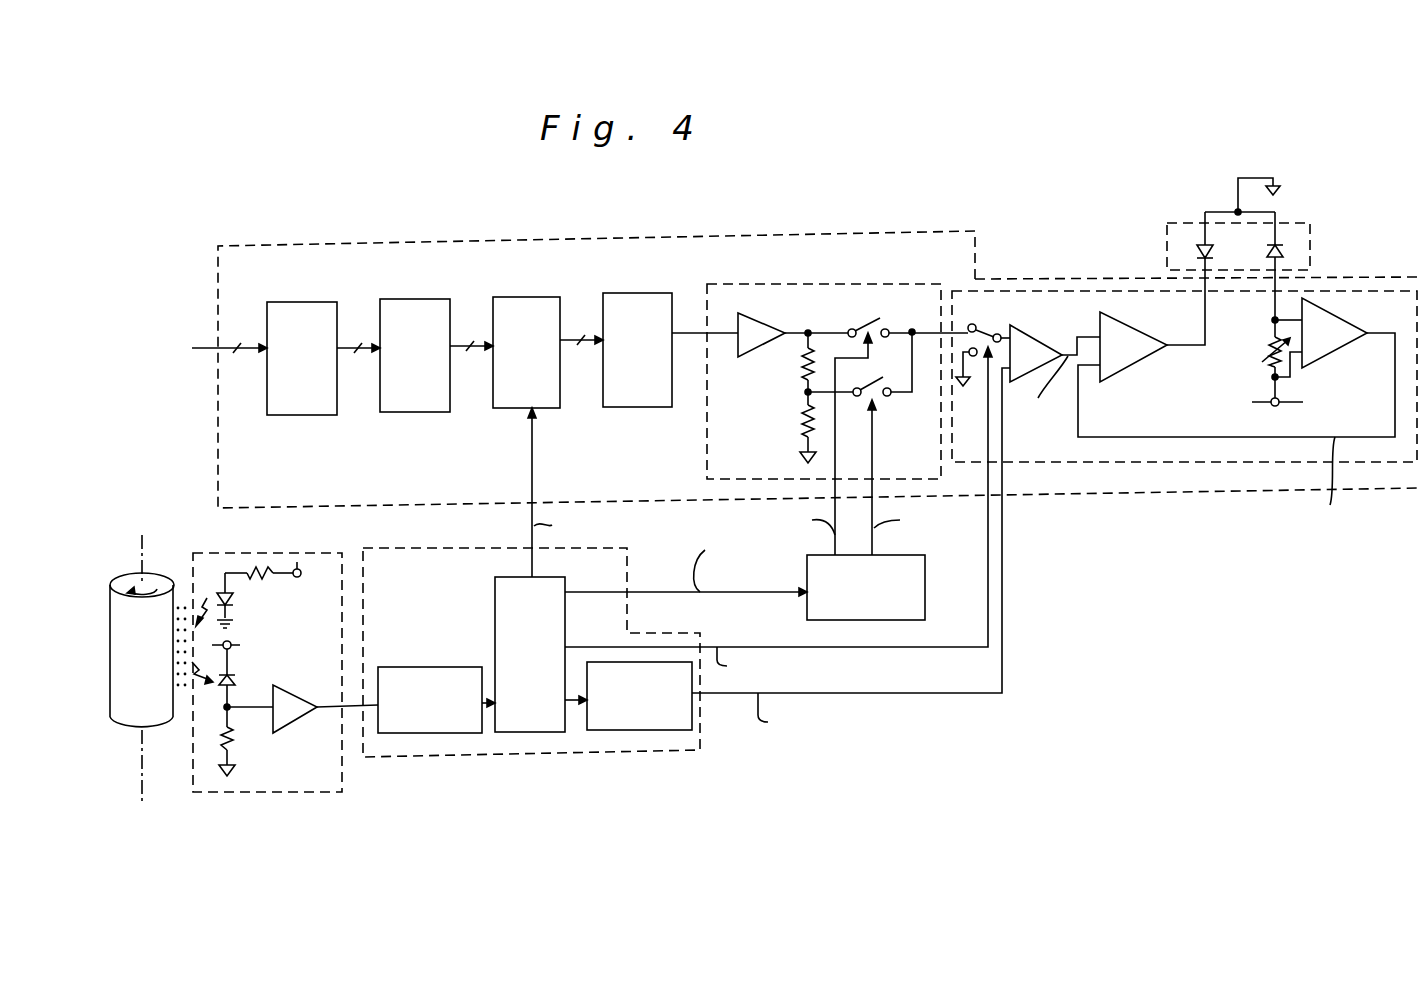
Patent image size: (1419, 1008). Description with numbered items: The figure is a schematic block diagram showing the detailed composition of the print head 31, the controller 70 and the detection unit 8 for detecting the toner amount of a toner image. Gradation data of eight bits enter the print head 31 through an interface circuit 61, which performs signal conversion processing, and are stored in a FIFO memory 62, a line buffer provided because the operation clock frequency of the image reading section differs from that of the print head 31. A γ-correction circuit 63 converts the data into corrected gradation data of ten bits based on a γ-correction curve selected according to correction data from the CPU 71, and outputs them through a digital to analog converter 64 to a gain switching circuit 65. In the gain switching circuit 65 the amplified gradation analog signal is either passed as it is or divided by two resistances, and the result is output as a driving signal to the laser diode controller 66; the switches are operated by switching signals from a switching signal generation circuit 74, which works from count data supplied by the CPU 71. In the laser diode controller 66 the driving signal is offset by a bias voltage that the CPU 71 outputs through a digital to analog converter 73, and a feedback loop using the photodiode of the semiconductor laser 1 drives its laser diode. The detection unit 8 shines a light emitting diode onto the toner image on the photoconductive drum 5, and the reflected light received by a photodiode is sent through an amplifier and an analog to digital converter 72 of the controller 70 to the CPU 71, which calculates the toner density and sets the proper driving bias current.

The semiconductor laser 1 is at (1308, 223).
The photoconductive drum 5 is at (120, 647).
The detection unit 8 is at (243, 792).
The print head 31 is at (848, 231).
The interface circuit 61 is at (297, 302).
The FIFO memory 62 is at (414, 299).
The γ-correction circuit 63 is at (530, 297).
The digital to analog converter 64 is at (638, 293).
The gain switching circuit 65 is at (917, 284).
The laser diode controller 66 is at (1056, 291).
The controller 70 is at (548, 757).
The CPU 71 is at (495, 603).
The analog to digital converter 72 is at (425, 667).
The digital to analog converter 73 is at (610, 662).
The switching signal generation circuit 74 is at (925, 570).